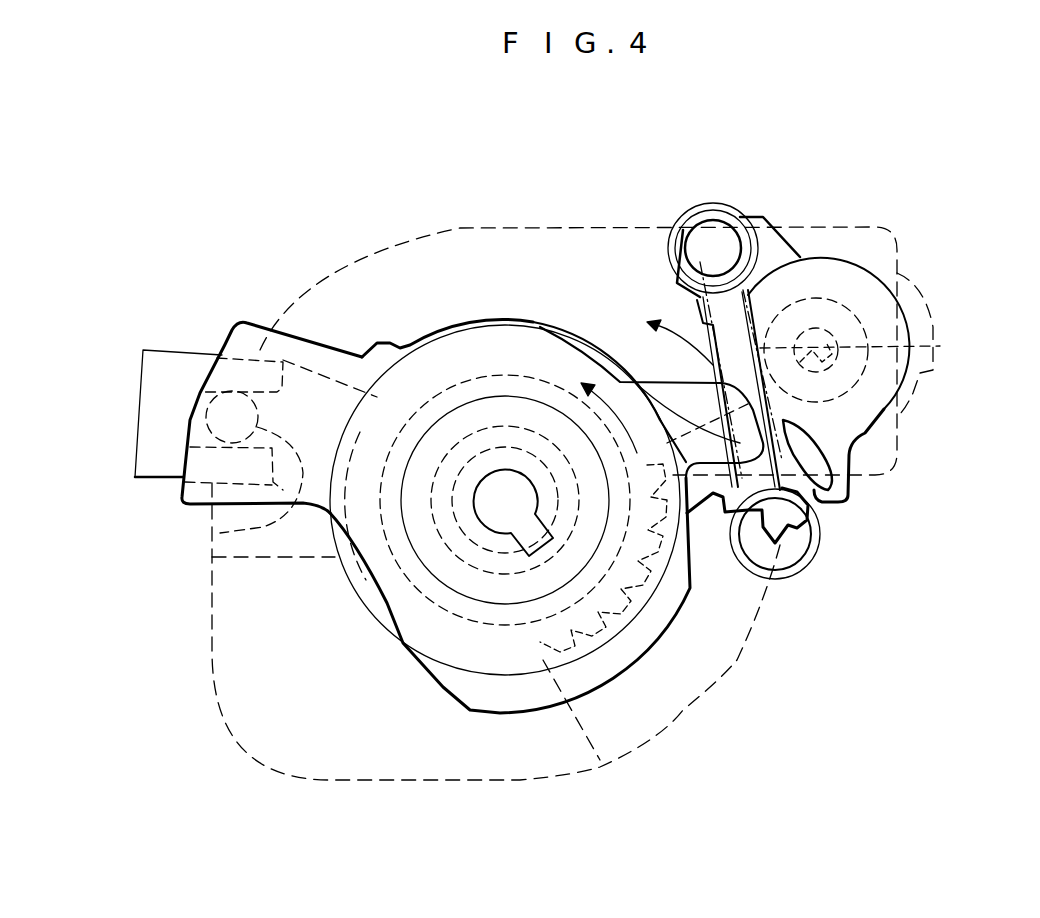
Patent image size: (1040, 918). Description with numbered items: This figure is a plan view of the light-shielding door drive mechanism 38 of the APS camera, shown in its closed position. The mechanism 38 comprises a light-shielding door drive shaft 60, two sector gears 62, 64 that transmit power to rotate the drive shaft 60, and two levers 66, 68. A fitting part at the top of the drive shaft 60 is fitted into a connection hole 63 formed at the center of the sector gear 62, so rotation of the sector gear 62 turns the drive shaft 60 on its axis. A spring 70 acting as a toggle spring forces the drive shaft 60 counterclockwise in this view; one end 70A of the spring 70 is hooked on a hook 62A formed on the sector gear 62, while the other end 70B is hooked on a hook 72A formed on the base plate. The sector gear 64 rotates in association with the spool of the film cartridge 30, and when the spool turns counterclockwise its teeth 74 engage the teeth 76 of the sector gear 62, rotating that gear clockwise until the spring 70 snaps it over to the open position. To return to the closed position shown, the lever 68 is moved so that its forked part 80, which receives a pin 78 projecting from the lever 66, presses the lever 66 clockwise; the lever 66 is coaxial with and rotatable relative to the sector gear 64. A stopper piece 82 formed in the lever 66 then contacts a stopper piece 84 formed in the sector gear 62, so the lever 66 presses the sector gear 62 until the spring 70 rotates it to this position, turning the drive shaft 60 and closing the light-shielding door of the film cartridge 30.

The film cartridge 30 is at (330, 780).
The light-shielding door drive mechanism 38 is at (238, 258).
The light-shielding door drive shaft 60 is at (913, 332).
The sector gear 62 is at (830, 430).
The hook 62A is at (717, 247).
The connection hole 63 is at (887, 425).
The sector gear 64 is at (437, 603).
The lever 66 is at (323, 350).
The lever 68 is at (137, 457).
The spring 70 is at (803, 262).
The one end of the spring 70A is at (713, 205).
The other end of the spring 70B is at (790, 567).
The hook 72A is at (760, 548).
The teeth 74 is at (647, 610).
The teeth 76 is at (700, 505).
The pin 78 is at (273, 553).
The forked part 80 is at (273, 513).
The stopper piece 82 is at (667, 440).
The stopper piece 84 is at (850, 505).